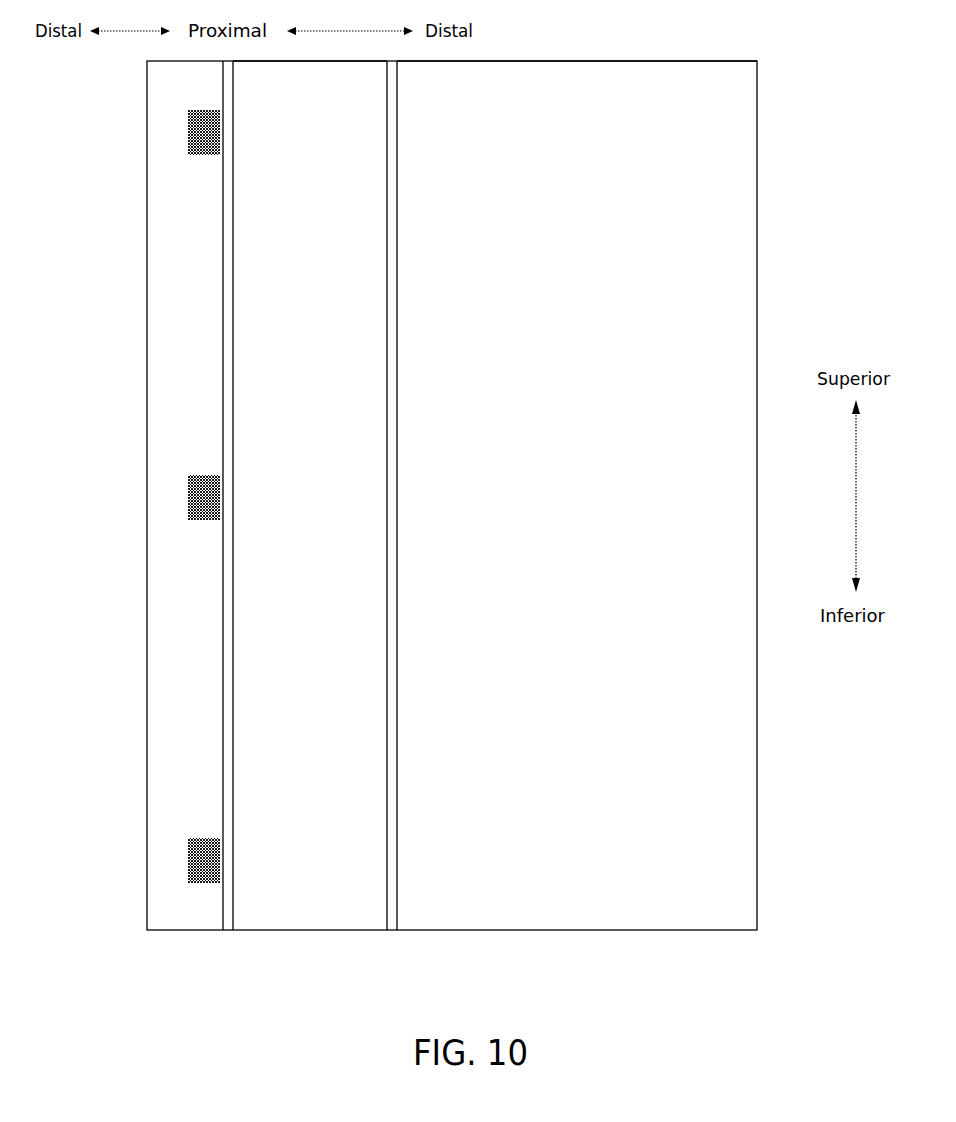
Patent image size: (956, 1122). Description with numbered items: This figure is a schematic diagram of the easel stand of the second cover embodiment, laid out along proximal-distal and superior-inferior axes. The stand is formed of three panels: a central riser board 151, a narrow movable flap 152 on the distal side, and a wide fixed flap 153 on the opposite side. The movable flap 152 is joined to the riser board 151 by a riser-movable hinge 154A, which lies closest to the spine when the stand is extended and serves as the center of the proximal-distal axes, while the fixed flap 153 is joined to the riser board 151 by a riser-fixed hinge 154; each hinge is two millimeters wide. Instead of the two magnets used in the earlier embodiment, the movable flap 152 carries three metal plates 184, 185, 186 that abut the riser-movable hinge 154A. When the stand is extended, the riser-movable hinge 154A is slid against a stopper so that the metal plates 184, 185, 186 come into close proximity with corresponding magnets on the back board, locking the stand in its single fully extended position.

The movable flap 152 is at (202, 363).
The riser board 151 is at (338, 363).
The fixed flap 153 is at (577, 506).
The riser-fixed hinge 154 is at (393, 932).
The riser-movable hinge 154A is at (228, 932).
The metal plate 184 is at (224, 127).
The metal plate 185 is at (224, 497).
The metal plate 186 is at (224, 850).